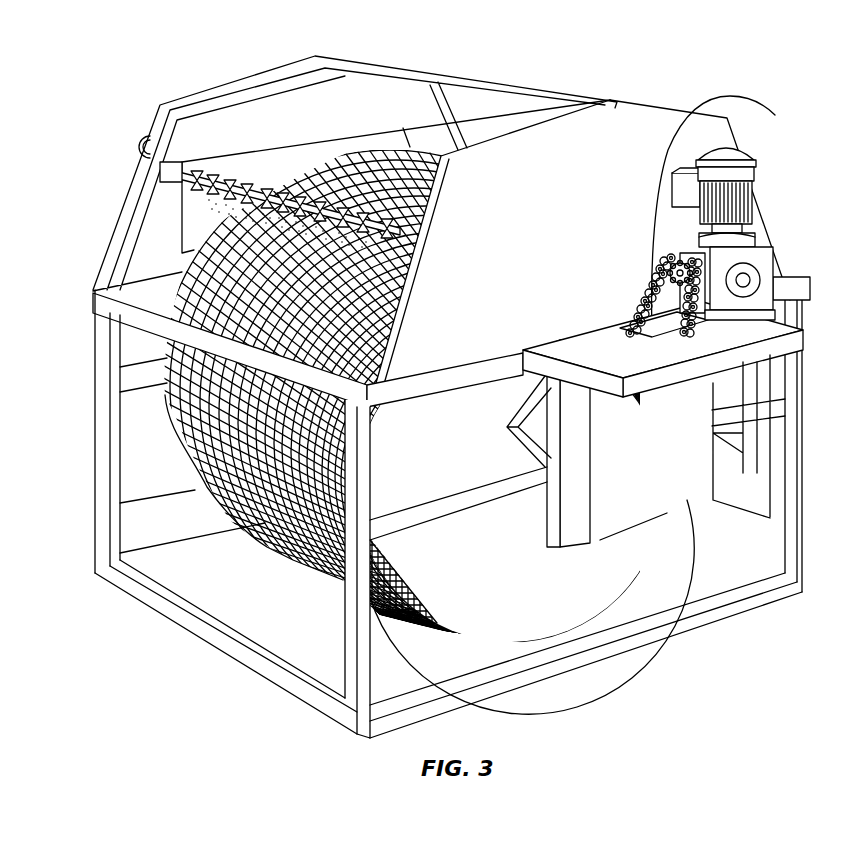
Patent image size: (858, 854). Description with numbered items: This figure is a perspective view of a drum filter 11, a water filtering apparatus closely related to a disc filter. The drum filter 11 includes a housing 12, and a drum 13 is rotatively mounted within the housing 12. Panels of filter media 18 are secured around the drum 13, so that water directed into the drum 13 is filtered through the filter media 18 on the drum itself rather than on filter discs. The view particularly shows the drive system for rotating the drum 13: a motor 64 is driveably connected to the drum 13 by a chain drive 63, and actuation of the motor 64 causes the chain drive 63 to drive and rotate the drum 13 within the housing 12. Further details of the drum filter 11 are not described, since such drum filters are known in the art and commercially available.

The drum filter 11 is at (552, 62).
The housing 12 is at (610, 142).
The drum 13 is at (527, 594).
The filter media 18 is at (207, 490).
The chain drive 63 is at (706, 110).
The motor 64 is at (745, 270).